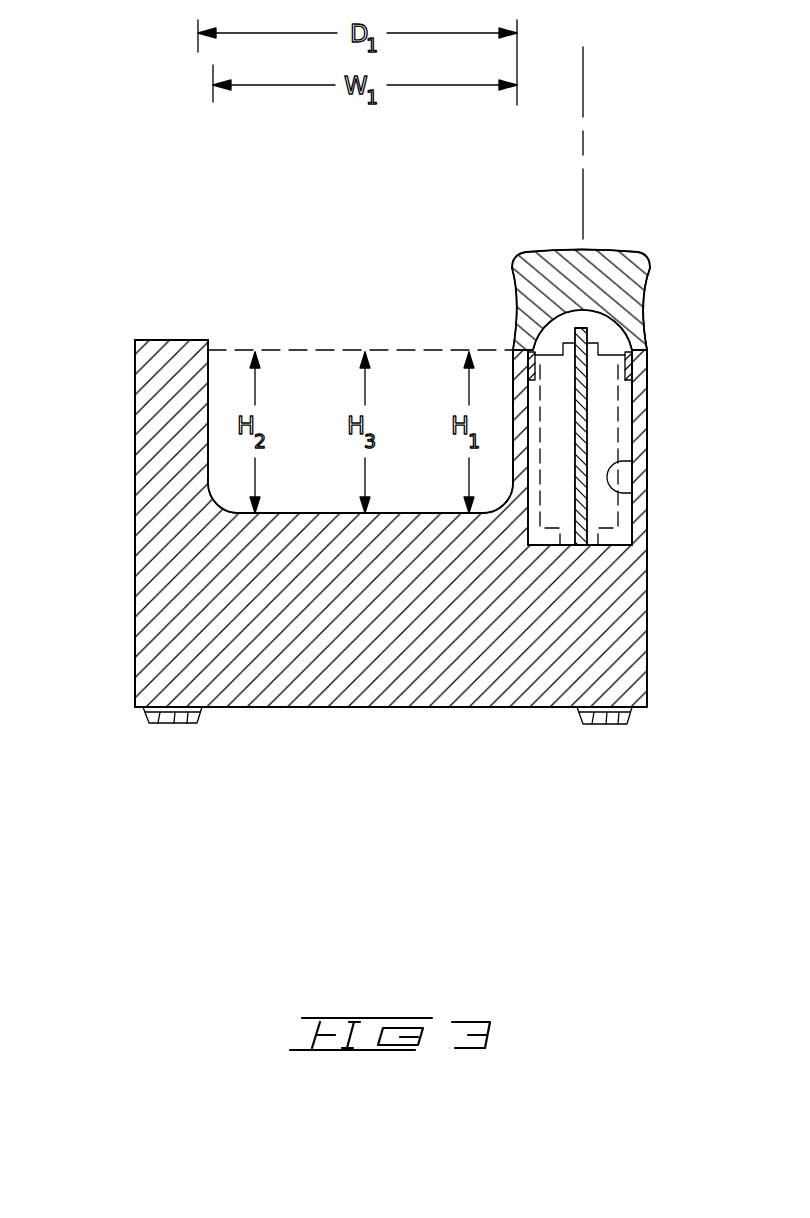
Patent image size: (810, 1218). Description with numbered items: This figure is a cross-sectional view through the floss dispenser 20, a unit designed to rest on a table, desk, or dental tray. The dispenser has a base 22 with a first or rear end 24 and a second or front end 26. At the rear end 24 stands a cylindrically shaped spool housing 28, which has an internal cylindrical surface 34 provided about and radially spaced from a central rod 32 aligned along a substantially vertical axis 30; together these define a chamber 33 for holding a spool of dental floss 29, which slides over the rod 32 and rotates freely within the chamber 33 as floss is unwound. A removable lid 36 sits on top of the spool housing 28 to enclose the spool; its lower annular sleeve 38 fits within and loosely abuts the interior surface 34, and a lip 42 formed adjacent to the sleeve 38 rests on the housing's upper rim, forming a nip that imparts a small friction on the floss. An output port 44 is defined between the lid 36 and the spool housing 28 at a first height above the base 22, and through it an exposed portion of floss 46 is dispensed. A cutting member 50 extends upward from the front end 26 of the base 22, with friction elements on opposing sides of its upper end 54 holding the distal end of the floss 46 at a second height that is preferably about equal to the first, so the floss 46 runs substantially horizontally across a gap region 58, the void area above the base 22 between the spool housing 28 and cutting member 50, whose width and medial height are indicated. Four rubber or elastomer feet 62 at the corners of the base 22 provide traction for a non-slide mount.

The floss dispenser 20 is at (100, 310).
The base 22 is at (375, 668).
The first or rear end 24 is at (617, 633).
The second or front end 26 is at (165, 668).
The spool housing 28 is at (640, 470).
The spool of dental floss 29 is at (658, 426).
The vertical axis 30 is at (587, 92).
The central rod 32 is at (586, 403).
The chamber 33 is at (624, 542).
The internal cylindrical surface 34 is at (615, 496).
The removable lid 36 is at (623, 256).
The lower annular sleeve 38 is at (634, 360).
The lip 42 is at (641, 345).
The output port 44 is at (517, 352).
The floss 46 is at (281, 350).
The cutting member 50 is at (150, 485).
The upper end 54 is at (148, 365).
The gap region 58 is at (312, 392).
The feet 62 is at (180, 720).